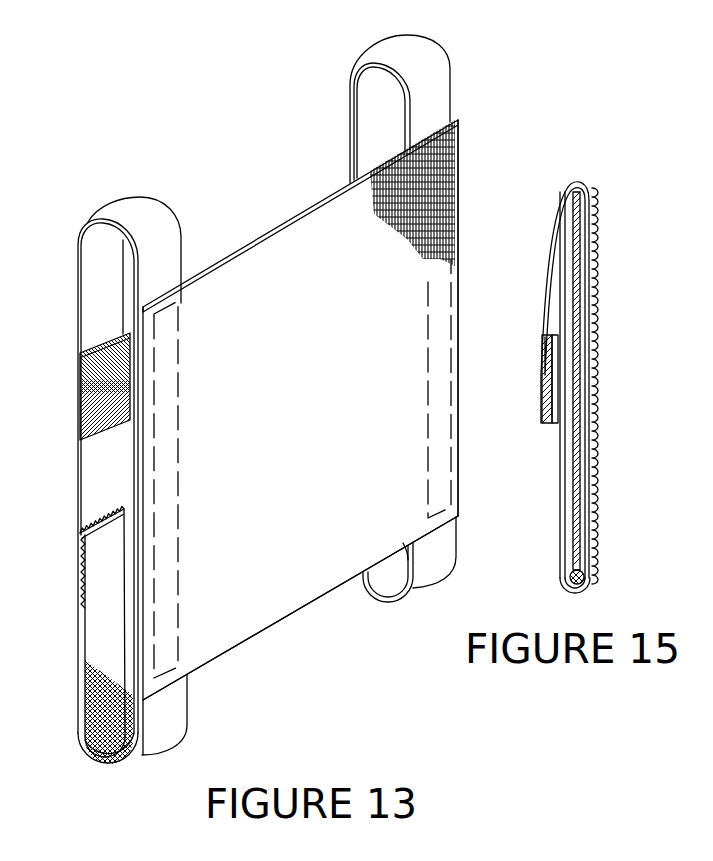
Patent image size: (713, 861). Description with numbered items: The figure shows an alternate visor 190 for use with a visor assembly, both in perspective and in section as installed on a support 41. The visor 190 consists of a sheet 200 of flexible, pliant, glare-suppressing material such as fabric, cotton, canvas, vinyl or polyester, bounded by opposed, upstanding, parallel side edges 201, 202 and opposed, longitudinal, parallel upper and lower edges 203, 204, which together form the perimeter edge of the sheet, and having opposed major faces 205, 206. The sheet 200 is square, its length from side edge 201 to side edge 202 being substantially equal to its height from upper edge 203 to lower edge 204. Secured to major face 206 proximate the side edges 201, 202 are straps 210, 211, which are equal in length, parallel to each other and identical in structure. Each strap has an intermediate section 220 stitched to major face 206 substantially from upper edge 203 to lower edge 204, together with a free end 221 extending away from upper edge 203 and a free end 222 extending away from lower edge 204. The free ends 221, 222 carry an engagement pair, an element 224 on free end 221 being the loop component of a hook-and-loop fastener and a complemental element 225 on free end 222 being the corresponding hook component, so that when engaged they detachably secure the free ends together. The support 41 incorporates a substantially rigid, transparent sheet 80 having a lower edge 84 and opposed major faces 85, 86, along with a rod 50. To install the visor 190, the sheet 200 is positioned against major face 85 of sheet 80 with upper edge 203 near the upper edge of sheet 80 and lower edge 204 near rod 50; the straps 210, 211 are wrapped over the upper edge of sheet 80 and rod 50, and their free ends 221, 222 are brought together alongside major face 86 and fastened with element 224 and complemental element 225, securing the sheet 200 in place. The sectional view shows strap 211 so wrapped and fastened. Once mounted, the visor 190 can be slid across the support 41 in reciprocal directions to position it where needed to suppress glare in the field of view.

In FIG. 13, the visor 190 is at (305, 237).
In FIG. 15, the visor 190 is at (625, 173).
In FIG. 13, the sheet 200 is at (416, 283).
In FIG. 15, the sheet 200 is at (592, 223).
In FIG. 13, the side edge 201 is at (143, 477).
In FIG. 13, the side edge 202 is at (459, 326).
In FIG. 15, the side edge 202 is at (565, 380).
In FIG. 13, the upper edge 203 is at (257, 232).
In FIG. 15, the upper edge 203 is at (594, 187).
In FIG. 13, the lower edge 204 is at (301, 617).
In FIG. 15, the lower edge 204 is at (597, 590).
In FIG. 13, the major face 205 is at (293, 406).
In FIG. 15, the major face 205 is at (595, 310).
In FIG. 13, the major face 206 is at (227, 248).
In FIG. 15, the major face 206 is at (592, 447).
In FIG. 13, the strap 210 is at (187, 708).
In FIG. 15, the strap 210 is at (563, 565).
In FIG. 13, the strap 211 is at (459, 549).
In FIG. 13, the intermediate section 220 is at (138, 463).
In FIG. 13, the free end 221 is at (62, 398).
In FIG. 15, the free end 221 is at (542, 380).
In FIG. 13, the free end 222 is at (97, 567).
In FIG. 15, the free end 222 is at (592, 388).
In FIG. 13, the element 224 is at (62, 398).
In FIG. 15, the element 224 is at (553, 363).
In FIG. 13, the complemental element 225 is at (92, 520).
In FIG. 15, the complemental element 225 is at (557, 403).
In FIG. 15, the support 41 is at (584, 268).
In FIG. 15, the sheet 80 is at (576, 342).
In FIG. 15, the lower edge 84 is at (597, 583).
In FIG. 15, the major face 85 is at (597, 537).
In FIG. 15, the major face 86 is at (592, 523).
In FIG. 15, the rod 50 is at (564, 590).